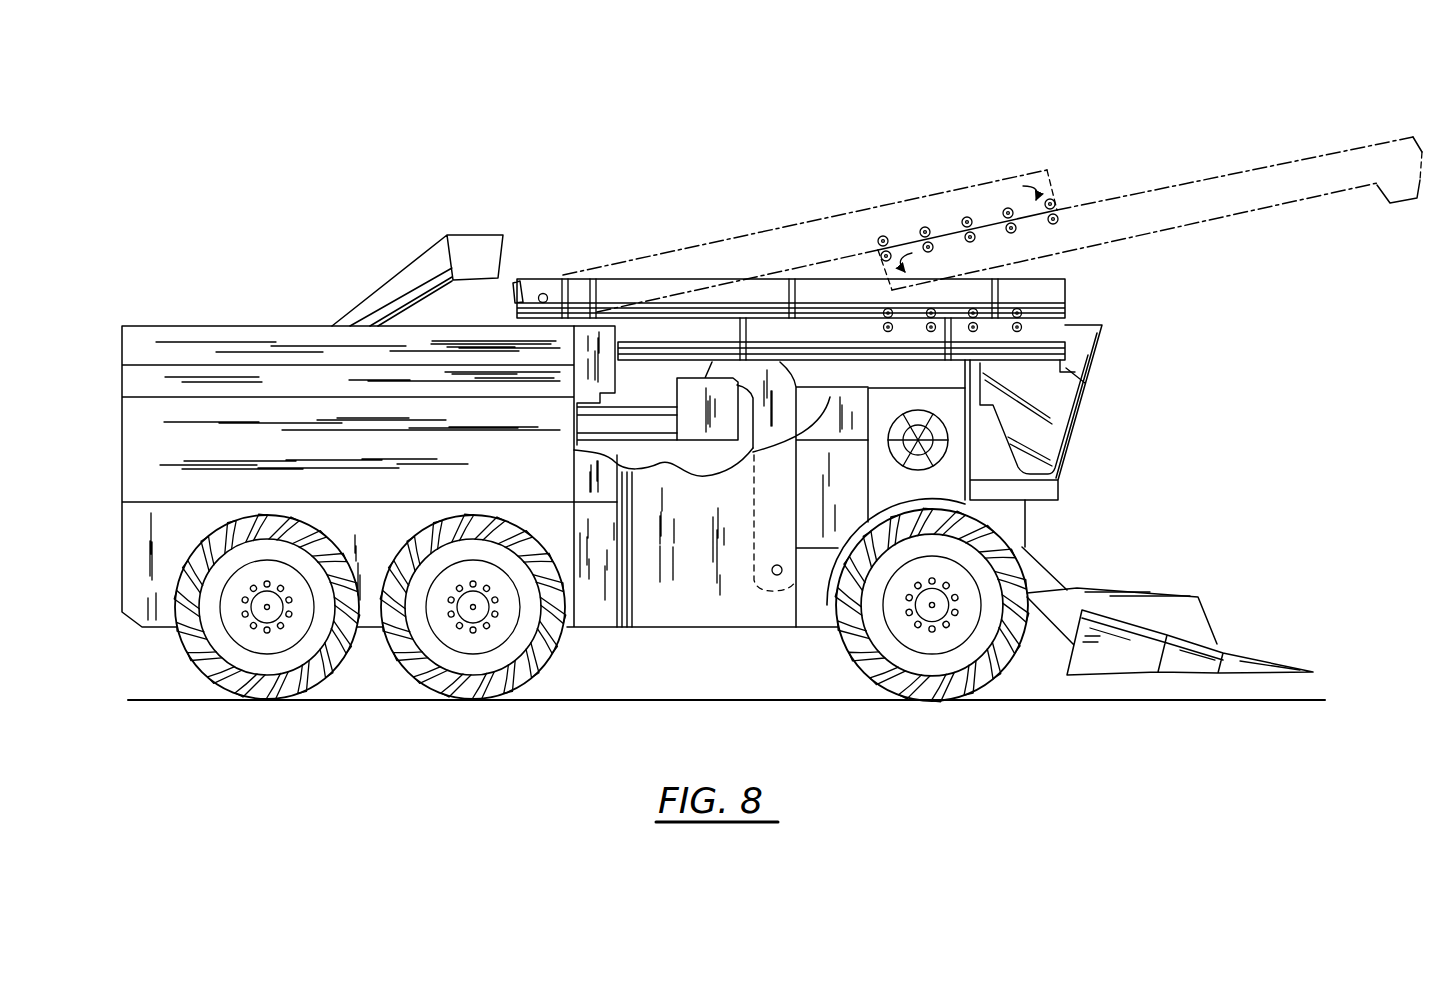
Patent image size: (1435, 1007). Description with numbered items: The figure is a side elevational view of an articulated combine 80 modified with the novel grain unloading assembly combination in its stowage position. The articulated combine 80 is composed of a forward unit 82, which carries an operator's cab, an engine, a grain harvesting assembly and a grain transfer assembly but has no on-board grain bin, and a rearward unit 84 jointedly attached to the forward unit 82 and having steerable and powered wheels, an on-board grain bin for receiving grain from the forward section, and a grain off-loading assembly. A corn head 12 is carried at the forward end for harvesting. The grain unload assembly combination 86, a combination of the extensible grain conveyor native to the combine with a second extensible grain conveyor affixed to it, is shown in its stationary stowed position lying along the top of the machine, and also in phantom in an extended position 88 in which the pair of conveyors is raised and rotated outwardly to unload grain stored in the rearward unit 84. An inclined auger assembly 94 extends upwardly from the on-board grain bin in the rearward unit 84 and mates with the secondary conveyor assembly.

The corn head 12 is at (1200, 608).
The articulated combine 80 is at (656, 216).
The forward unit 82 is at (1122, 455).
The rearward unit 84 is at (270, 300).
The grain unload assembly combination 86 is at (1088, 295).
The extended position 88 is at (1133, 157).
The inclined auger assembly 94 is at (433, 258).